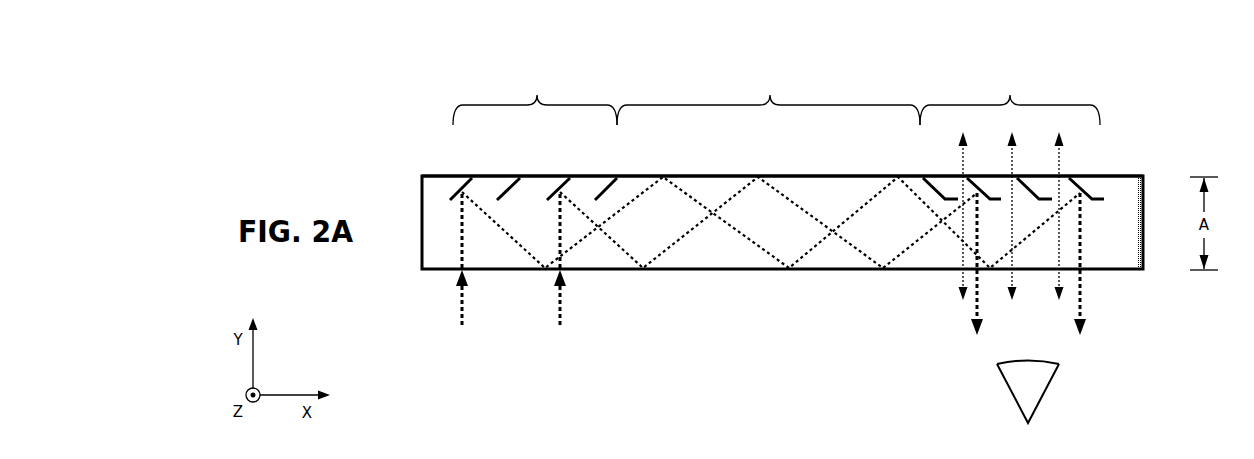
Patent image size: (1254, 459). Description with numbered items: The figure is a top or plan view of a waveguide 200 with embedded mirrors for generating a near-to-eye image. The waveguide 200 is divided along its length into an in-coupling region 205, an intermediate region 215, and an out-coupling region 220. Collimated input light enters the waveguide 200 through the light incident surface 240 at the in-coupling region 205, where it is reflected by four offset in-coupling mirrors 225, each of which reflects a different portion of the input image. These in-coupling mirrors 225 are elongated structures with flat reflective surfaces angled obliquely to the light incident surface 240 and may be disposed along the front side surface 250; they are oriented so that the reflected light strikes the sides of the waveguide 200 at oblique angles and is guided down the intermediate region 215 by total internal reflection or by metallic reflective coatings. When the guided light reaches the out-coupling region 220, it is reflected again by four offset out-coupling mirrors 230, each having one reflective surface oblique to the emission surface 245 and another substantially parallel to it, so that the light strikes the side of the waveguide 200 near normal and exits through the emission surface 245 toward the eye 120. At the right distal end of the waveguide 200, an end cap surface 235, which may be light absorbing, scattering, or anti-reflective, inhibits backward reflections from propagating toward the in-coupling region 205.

The waveguide 200 is at (399, 100).
The in-coupling region 205 is at (535, 87).
The intermediate region 215 is at (768, 87).
The out-coupling region 220 is at (1008, 87).
The in-coupling mirrors 225 is at (548, 188).
The out-coupling mirrors 230 is at (1083, 178).
The end cap surface 235 is at (1145, 178).
The light incident surface 240 is at (452, 271).
The emission surface 245 is at (1095, 271).
The front side surface 250 is at (428, 178).
The eye 120 is at (1012, 395).